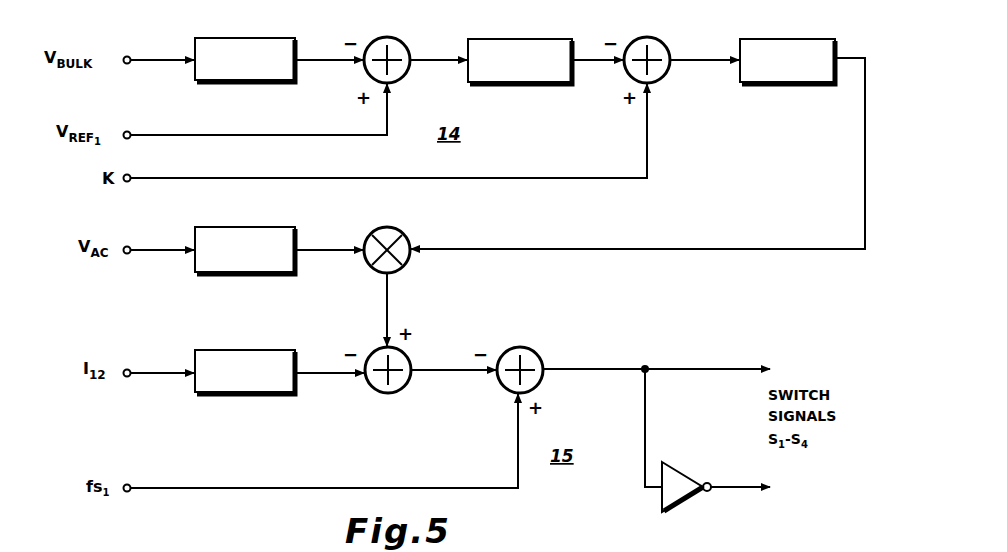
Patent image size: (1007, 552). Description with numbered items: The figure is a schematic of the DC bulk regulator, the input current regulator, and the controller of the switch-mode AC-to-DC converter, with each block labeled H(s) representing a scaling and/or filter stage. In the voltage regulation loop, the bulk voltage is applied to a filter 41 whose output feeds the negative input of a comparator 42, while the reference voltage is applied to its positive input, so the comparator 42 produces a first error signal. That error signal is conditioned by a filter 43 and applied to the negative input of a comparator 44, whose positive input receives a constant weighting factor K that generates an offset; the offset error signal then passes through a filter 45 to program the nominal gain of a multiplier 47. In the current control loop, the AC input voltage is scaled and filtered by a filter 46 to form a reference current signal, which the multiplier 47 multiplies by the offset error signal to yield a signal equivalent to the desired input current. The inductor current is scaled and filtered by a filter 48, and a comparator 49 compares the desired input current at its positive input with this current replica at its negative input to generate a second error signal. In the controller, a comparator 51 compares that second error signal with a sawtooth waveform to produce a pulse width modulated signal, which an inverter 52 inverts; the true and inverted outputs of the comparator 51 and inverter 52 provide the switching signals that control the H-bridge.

The filter 41 is at (272, 38).
The comparator 42 is at (407, 48).
The filter 43 is at (532, 39).
The comparator 44 is at (668, 52).
The filter 45 is at (790, 39).
The filter 46 is at (295, 237).
The multiplier 47 is at (408, 240).
The filter 48 is at (290, 350).
The comparator 49 is at (409, 360).
The comparator 51 is at (541, 360).
The inverter 52 is at (680, 466).